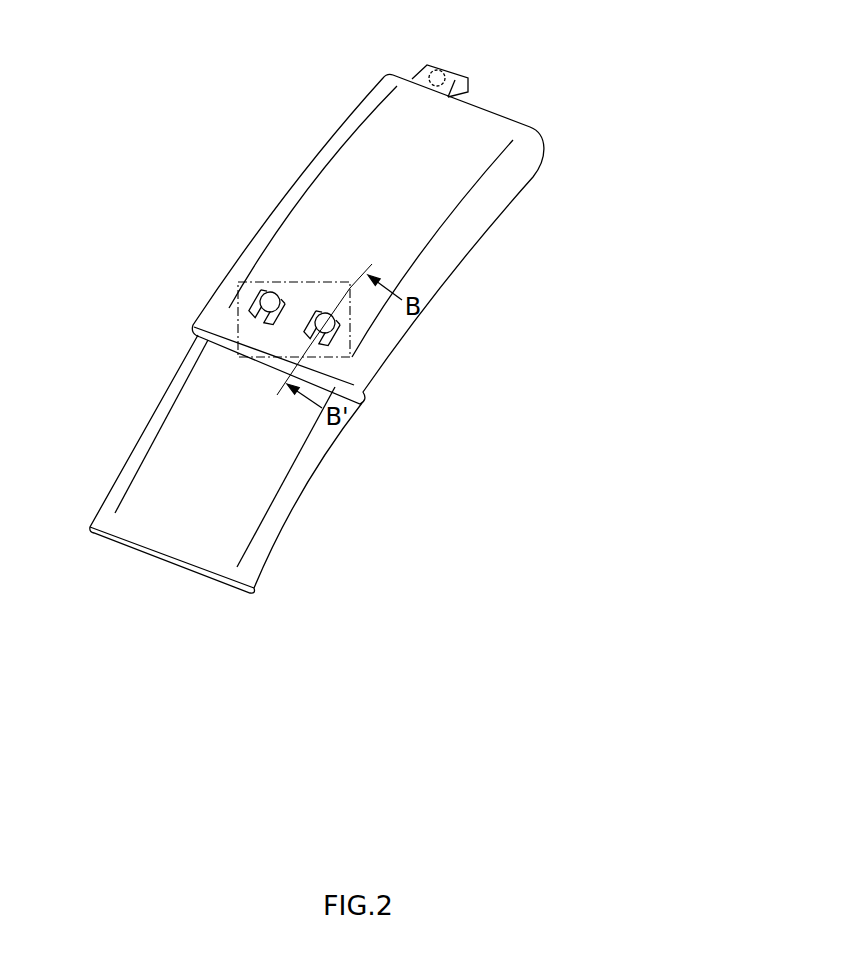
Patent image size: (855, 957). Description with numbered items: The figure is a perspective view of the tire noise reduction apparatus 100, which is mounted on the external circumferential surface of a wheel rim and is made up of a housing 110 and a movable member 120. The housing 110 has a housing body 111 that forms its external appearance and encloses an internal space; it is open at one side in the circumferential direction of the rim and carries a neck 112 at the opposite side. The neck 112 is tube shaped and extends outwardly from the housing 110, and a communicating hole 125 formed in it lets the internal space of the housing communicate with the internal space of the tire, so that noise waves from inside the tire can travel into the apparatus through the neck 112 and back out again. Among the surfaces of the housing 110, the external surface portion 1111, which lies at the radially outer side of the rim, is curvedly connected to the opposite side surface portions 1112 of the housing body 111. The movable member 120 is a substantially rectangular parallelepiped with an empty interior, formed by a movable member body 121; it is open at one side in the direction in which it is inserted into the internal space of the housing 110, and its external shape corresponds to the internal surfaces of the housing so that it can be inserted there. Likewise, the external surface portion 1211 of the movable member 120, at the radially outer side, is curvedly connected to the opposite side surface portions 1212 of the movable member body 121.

The tire noise reduction apparatus 100 is at (174, 48).
The housing 110 is at (282, 144).
The housing body 111 is at (637, 203).
The external surface portion of the housing 1111 is at (413, 153).
The opposite side surface portions of the housing 1112 is at (292, 203).
The neck 112 is at (455, 80).
The communicating hole 125 is at (436, 67).
The movable member 120 is at (128, 396).
The movable member body 121 is at (416, 473).
The external surface portion of the movable member 1211 is at (243, 440).
The opposite side surface portions of the movable member 1212 is at (140, 440).